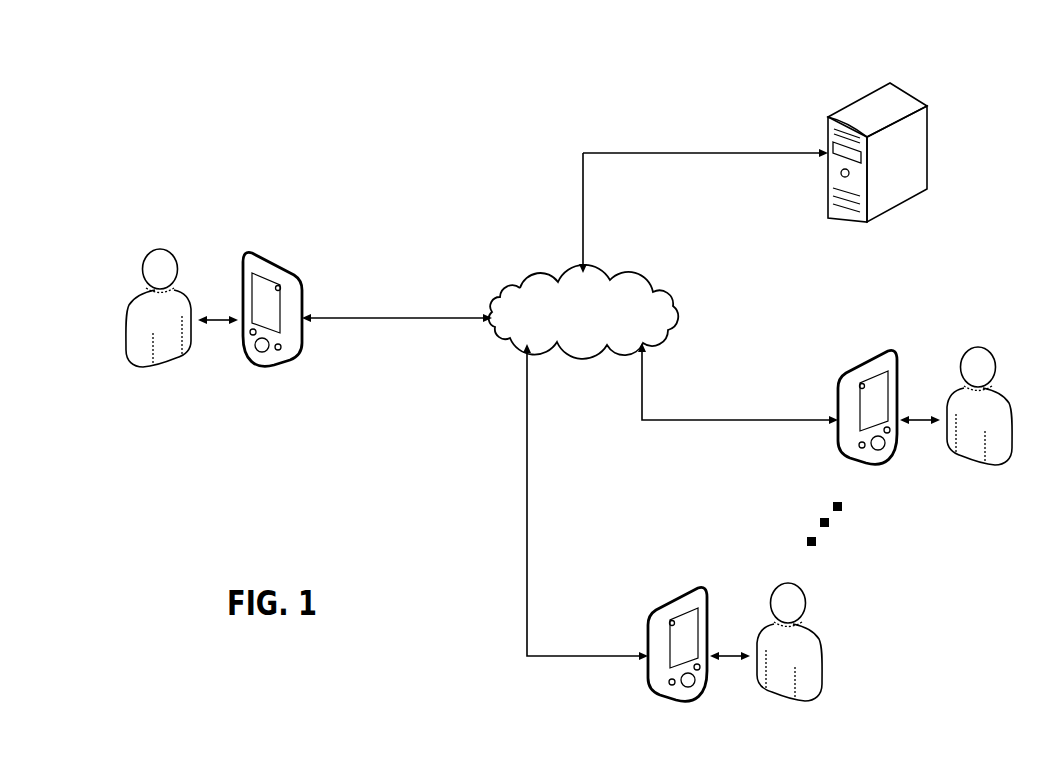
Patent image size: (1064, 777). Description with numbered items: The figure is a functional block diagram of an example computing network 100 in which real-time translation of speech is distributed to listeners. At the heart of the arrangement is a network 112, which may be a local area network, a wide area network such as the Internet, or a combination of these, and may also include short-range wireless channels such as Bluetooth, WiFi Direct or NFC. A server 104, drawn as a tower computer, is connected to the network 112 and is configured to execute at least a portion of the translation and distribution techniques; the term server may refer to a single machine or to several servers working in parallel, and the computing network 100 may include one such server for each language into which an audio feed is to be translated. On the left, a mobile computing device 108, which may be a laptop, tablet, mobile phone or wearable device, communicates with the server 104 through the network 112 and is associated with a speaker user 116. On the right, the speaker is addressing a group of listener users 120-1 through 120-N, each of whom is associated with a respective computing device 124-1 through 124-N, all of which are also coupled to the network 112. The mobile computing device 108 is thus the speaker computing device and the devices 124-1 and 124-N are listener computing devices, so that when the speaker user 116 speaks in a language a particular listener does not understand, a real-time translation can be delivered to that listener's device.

The computing network 100 is at (239, 68).
The server 104 is at (905, 93).
The mobile computing device 108 is at (282, 266).
The network 112 is at (677, 296).
The speaker user 116 is at (159, 249).
The listener user 120-1 is at (978, 348).
The listener user 120-N is at (797, 700).
The computing device 124-1 is at (855, 368).
The computing device 124-N is at (665, 604).